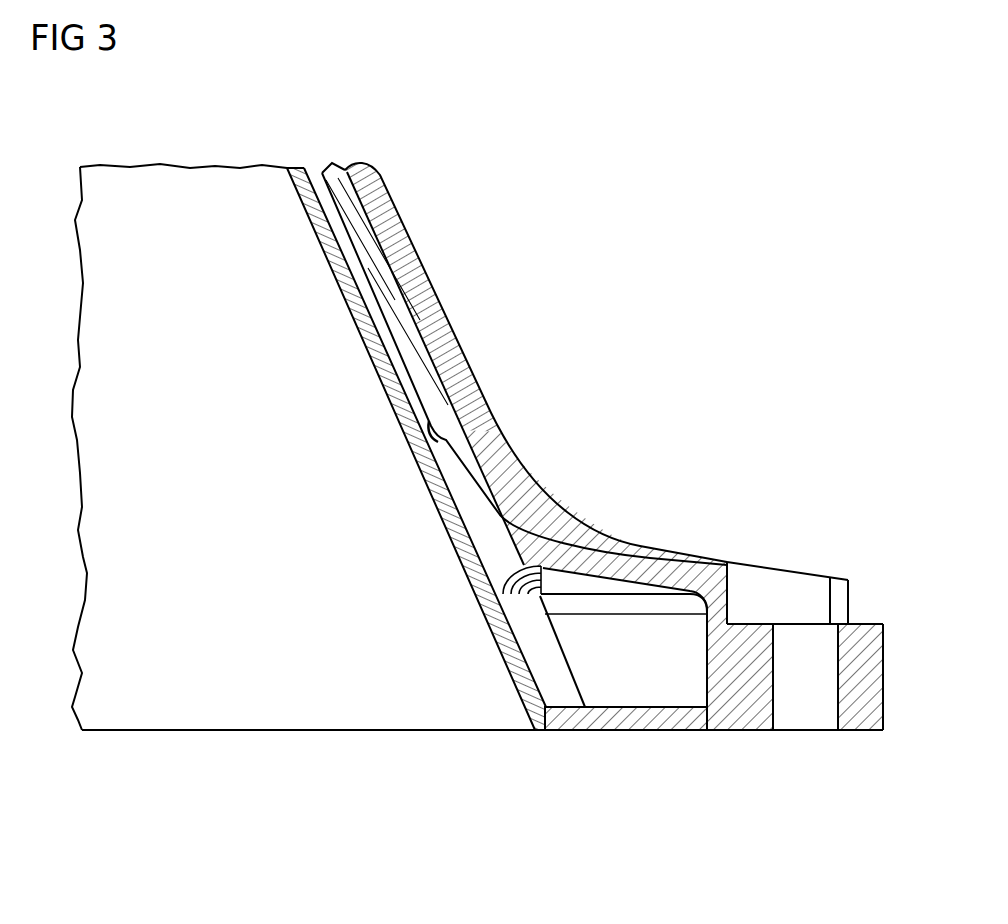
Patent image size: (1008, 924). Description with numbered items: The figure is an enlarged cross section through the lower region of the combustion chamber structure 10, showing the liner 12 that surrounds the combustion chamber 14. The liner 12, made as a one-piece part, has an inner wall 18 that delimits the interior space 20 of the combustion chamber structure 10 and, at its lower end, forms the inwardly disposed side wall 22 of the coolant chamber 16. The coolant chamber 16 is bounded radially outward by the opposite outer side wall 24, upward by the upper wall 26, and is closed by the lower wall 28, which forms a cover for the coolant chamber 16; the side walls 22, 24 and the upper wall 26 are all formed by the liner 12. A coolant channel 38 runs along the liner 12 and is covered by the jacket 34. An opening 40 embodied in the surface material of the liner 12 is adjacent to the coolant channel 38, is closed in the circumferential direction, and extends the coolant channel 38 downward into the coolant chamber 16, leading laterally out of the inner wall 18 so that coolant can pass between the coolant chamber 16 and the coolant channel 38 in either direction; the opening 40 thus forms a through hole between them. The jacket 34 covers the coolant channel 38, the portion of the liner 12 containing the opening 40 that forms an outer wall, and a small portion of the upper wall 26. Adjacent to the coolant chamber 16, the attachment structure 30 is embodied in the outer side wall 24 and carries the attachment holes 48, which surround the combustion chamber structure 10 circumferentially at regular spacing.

The combustion chamber structure 10 is at (578, 163).
The liner 12 is at (690, 572).
The combustion chamber 14 is at (215, 182).
The coolant chamber 16 is at (628, 690).
The inner wall 18 is at (347, 262).
The interior space 20 is at (98, 337).
The inwardly disposed side wall 22 is at (507, 677).
The outer side wall 24 is at (733, 717).
The upper wall 26 is at (637, 560).
The lower wall 28 is at (669, 720).
The attachment structure 30 is at (753, 717).
The jacket 34 is at (418, 306).
The coolant channel 38 is at (318, 175).
The opening 40 is at (453, 468).
The attachment hole 48 is at (802, 717).